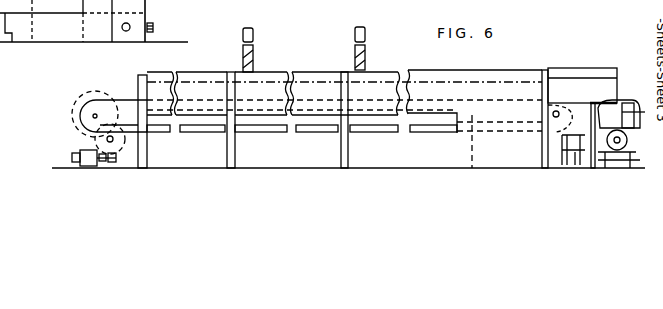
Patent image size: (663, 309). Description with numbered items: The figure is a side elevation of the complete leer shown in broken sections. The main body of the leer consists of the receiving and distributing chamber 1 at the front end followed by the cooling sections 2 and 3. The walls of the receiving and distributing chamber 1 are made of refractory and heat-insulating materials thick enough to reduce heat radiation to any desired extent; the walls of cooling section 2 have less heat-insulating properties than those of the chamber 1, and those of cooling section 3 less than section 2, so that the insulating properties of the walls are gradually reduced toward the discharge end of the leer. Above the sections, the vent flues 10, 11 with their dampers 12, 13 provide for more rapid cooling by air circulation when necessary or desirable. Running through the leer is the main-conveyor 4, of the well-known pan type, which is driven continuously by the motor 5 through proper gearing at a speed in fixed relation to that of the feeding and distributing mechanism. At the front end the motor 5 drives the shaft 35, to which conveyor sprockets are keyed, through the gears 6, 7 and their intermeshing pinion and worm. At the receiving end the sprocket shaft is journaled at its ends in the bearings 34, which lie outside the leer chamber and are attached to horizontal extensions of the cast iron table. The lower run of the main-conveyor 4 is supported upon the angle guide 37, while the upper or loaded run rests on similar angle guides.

The receiving and distributing chamber 1 is at (582, 85).
The cooling section 2 is at (345, 93).
The cooling section 3 is at (201, 93).
The main-conveyor 4 is at (125, 99).
The motor 5 is at (80, 155).
The gear 6 is at (78, 97).
The gear 7 is at (125, 148).
The vent flue 10 is at (365, 28).
The vent flue 11 is at (251, 30).
The damper 12 is at (360, 58).
The damper 13 is at (247, 62).
The bearing 34 is at (556, 112).
The shaft 35 is at (93, 116).
The guide 37 is at (430, 128).